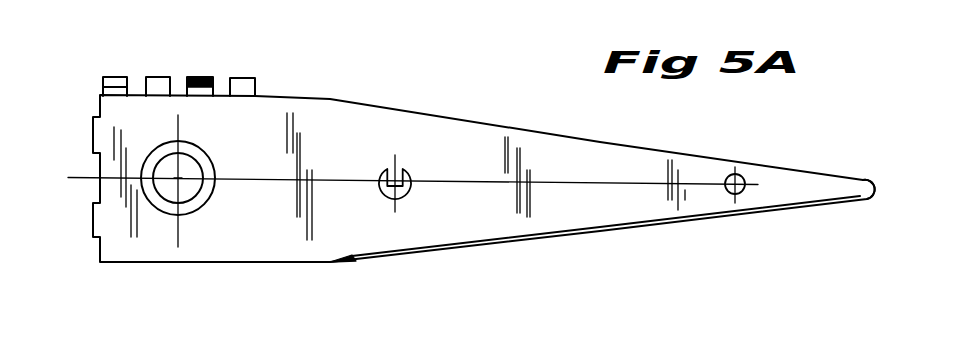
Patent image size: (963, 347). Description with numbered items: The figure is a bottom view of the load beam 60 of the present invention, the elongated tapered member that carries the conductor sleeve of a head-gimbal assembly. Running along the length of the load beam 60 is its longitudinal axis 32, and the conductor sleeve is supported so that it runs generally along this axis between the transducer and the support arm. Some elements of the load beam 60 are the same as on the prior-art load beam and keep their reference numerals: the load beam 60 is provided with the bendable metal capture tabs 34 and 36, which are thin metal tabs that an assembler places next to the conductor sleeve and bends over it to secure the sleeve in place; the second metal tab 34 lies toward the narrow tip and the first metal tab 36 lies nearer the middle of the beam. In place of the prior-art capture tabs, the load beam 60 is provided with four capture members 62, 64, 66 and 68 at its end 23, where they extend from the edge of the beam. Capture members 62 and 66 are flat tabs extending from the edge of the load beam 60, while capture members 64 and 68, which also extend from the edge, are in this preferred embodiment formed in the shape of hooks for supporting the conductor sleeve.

The end 23 is at (117, 118).
The longitudinal axis 32 is at (572, 183).
The second metal tab 34 is at (848, 205).
The first metal tab 36 is at (393, 170).
The load beam 60 is at (357, 123).
The capture member 62 is at (238, 77).
The capture member 64 is at (194, 77).
The capture member 66 is at (156, 77).
The capture member 68 is at (112, 77).